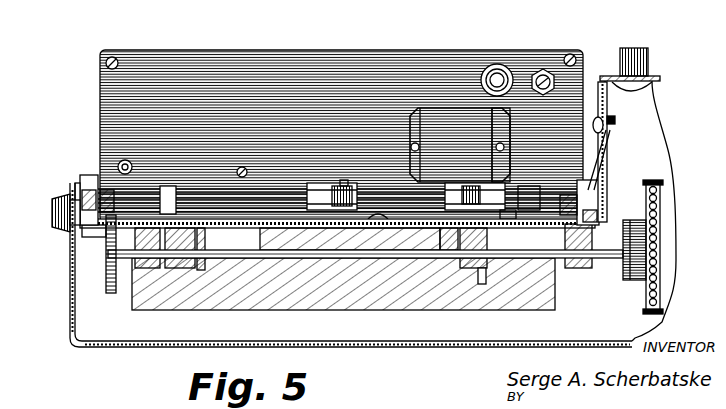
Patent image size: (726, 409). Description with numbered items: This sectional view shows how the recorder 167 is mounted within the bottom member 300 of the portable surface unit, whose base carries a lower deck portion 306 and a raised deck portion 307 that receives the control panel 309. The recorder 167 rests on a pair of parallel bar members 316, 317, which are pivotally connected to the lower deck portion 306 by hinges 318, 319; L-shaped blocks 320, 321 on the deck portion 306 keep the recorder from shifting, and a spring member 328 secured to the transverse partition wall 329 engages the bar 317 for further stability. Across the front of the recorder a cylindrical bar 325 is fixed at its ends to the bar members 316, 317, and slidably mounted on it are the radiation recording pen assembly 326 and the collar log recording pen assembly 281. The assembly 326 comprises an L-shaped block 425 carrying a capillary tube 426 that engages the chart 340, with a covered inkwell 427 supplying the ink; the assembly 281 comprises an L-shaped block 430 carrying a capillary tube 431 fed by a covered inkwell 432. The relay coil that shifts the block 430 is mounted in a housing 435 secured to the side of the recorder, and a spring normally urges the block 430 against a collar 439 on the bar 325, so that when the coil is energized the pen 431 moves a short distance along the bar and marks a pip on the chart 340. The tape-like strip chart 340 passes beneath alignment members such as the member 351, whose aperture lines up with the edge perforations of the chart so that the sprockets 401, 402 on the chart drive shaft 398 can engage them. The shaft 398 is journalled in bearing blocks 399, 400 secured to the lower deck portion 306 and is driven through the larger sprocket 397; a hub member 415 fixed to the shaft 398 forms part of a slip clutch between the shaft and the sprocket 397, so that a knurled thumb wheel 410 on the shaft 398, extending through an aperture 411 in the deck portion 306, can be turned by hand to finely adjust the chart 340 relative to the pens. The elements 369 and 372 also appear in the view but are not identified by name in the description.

The recorder 167 is at (234, 64).
The housing 435 is at (460, 108).
The L-shaped block 430 is at (450, 184).
The collar log recording pen assembly 281 is at (510, 178).
The cylindrical bar 325 is at (212, 186).
The covered inkwell 427 is at (296, 198).
The alignment member 351 is at (170, 188).
The L-shaped block 320 is at (114, 192).
The radiation recording pen assembly 326 is at (322, 183).
The L-shaped block 425 is at (340, 183).
The covered inkwell 432 is at (478, 184).
The collar 439 is at (526, 188).
The stop member 372 is at (516, 214).
The tape-like strip chart 340 is at (380, 219).
The lower deck portion 306 is at (234, 218).
The sprocket 401 is at (202, 272).
The capillary tube 426 is at (336, 222).
The capillary tube 431 is at (444, 231).
The bearing block 400 is at (184, 268).
The sprocket 402 is at (478, 282).
The bearing block 399 is at (577, 268).
The chart drive shaft 398 is at (612, 260).
The knurled thumb wheel 410 is at (108, 286).
The aperture 411 is at (104, 229).
The bar member 316 is at (96, 185).
The hinge 318 is at (70, 232).
The bottom member 300 is at (106, 350).
The bar member 317 is at (592, 188).
The hinge 319 is at (580, 200).
The L-shaped block 321 is at (590, 214).
The control panel 309 is at (652, 76).
The raised deck portion 307 is at (652, 88).
The spring member 328 is at (607, 158).
The transverse partition wall 329 is at (612, 132).
The chain 369 is at (662, 184).
The larger sprocket 397 is at (662, 288).
The hub member 415 is at (638, 282).